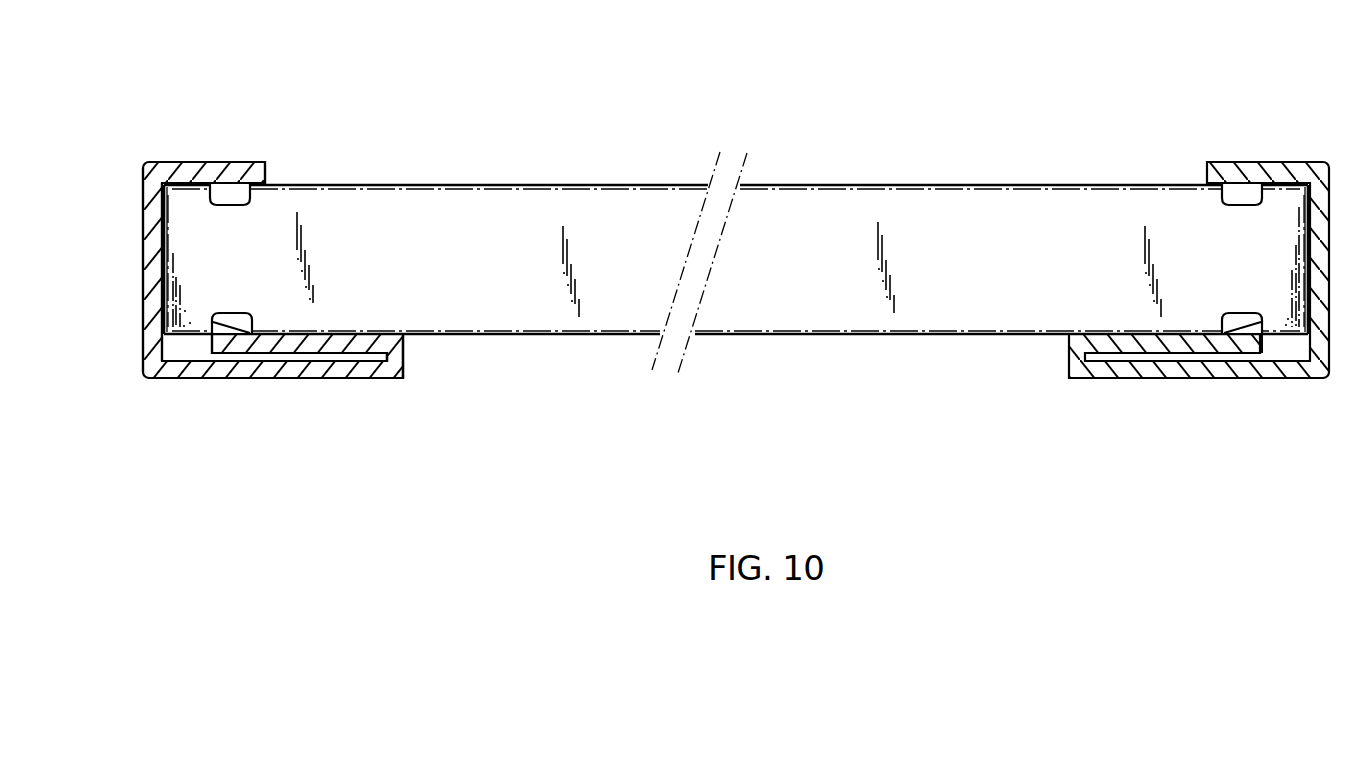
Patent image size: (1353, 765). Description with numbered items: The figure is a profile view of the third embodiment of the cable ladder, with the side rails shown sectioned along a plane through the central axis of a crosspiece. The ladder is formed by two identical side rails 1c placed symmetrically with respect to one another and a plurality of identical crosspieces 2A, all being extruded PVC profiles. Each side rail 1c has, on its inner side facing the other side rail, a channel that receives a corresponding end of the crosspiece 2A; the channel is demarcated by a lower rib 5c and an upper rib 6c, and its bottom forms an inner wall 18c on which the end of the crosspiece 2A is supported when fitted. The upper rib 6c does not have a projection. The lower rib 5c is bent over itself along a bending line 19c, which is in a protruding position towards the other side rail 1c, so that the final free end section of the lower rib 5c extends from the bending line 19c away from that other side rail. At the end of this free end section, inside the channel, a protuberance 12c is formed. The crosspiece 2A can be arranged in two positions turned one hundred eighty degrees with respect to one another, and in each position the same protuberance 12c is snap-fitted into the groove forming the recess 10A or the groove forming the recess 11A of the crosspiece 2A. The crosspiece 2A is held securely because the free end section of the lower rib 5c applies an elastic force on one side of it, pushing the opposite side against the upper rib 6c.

The side rail 1c is at (185, 162).
The crosspiece 2A is at (938, 182).
The lower rib 5c is at (324, 350).
The upper rib 6c is at (223, 163).
The recess 10A is at (228, 193).
The recess 11A is at (240, 322).
The protuberance 12c is at (227, 335).
The inner wall 18c is at (160, 258).
The bending line 19c is at (387, 353).